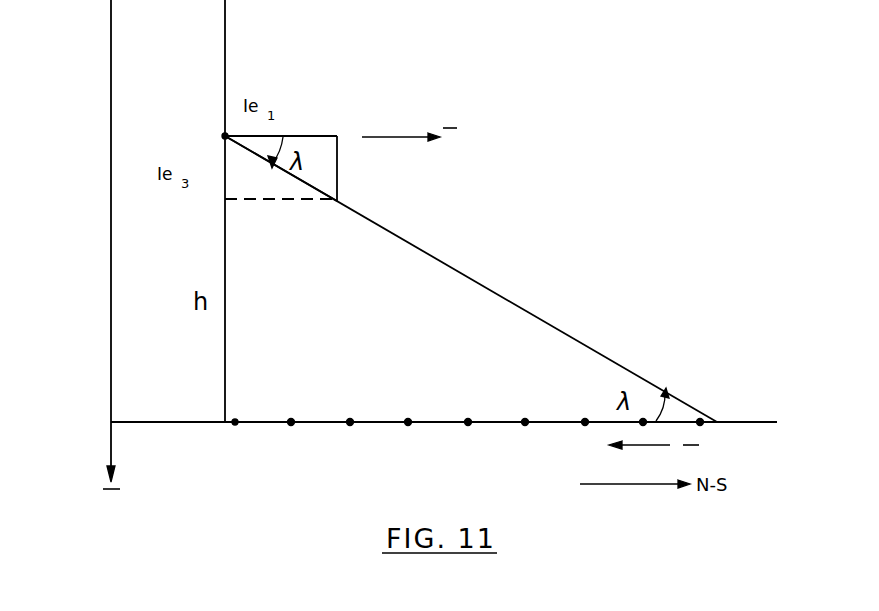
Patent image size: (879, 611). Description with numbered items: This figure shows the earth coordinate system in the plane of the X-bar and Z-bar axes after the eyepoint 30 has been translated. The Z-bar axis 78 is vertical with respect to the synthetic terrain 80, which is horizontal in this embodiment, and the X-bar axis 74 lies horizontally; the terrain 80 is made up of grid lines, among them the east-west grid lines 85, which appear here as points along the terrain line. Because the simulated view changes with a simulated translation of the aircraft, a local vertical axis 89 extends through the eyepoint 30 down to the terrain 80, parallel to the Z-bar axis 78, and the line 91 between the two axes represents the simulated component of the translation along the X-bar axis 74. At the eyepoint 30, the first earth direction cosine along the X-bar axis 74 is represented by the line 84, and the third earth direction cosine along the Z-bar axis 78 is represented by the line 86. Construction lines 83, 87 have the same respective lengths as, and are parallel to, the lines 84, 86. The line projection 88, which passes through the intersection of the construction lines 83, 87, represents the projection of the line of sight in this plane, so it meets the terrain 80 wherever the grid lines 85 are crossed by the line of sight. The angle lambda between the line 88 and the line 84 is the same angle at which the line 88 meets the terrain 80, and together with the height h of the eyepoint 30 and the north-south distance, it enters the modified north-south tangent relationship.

The local vertical axis 89 is at (226, 38).
The line 91 is at (178, 423).
The Z-bar axis 78 is at (111, 432).
The eyepoint 30 is at (225, 136).
The line representing first earth direction cosine 84 is at (310, 135).
The construction line 87 is at (338, 165).
The line representing third earth direction cosine 86 is at (228, 194).
The construction line 83 is at (290, 192).
The line projection 88 is at (478, 283).
The X-bar axis 74 is at (380, 136).
The synthetic terrain 80 is at (722, 420).
The east-west grid lines 85 is at (585, 424).